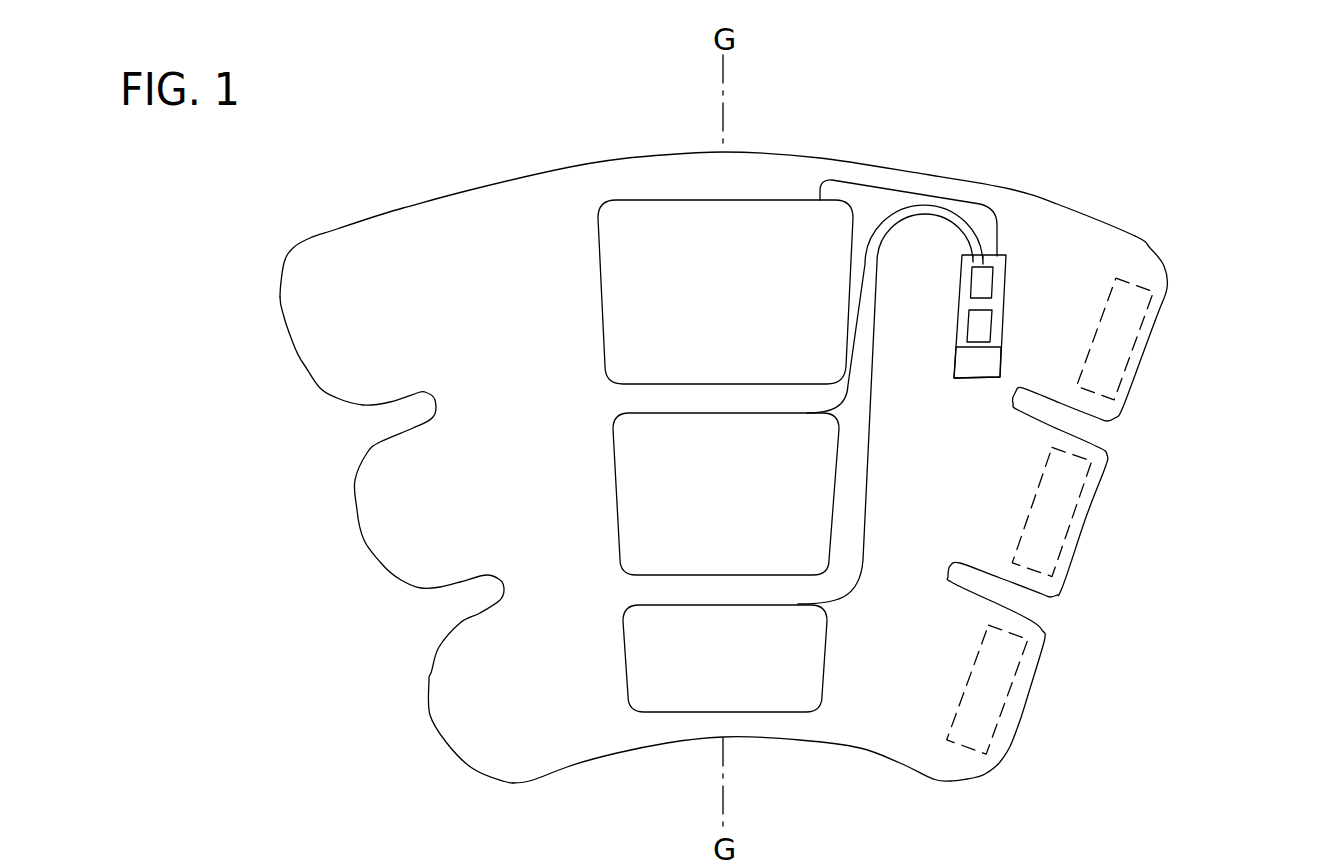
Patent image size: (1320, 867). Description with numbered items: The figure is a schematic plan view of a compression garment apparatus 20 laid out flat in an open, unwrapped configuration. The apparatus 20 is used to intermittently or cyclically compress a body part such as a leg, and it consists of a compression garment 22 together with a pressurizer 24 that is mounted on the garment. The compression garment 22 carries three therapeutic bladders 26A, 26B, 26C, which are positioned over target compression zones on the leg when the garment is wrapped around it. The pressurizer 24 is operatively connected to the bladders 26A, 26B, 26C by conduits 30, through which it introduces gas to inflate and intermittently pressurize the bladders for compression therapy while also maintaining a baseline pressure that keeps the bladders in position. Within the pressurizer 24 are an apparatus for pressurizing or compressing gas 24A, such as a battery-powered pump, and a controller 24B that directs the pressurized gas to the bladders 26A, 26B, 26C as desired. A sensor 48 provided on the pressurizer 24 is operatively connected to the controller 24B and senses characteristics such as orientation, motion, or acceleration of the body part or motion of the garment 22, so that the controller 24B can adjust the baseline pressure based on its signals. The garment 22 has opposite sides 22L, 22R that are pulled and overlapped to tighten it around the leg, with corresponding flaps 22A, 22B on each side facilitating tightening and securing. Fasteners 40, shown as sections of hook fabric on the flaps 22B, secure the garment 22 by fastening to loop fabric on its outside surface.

The compression garment apparatus 20 is at (374, 159).
The compression garment 22 is at (812, 136).
The flaps 22A is at (328, 331).
The left side of compression garment 22L is at (335, 460).
The flaps 22B is at (1153, 319).
The right side of compression garment 22R is at (1128, 442).
The pressurizer 24 is at (1020, 240).
The apparatus for pressurizing or compressing gas 24A is at (977, 362).
The controller 24B is at (979, 326).
The sensor 48 is at (982, 282).
The therapeutic bladder 26A is at (660, 660).
The therapeutic bladder 26B is at (652, 497).
The therapeutic bladder 26C is at (641, 312).
The conduits 30 is at (896, 208).
The fasteners 40 is at (1135, 280).